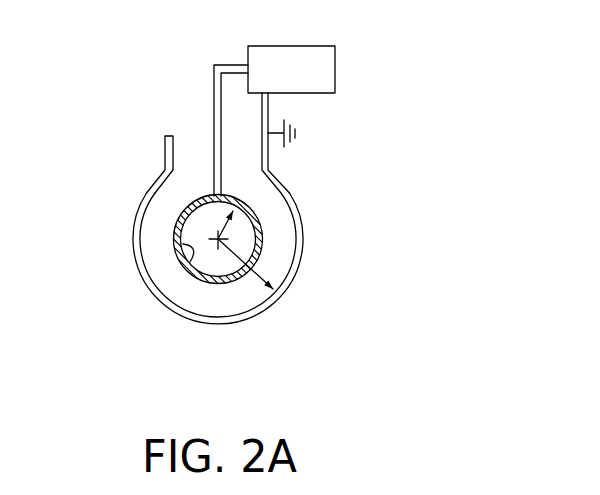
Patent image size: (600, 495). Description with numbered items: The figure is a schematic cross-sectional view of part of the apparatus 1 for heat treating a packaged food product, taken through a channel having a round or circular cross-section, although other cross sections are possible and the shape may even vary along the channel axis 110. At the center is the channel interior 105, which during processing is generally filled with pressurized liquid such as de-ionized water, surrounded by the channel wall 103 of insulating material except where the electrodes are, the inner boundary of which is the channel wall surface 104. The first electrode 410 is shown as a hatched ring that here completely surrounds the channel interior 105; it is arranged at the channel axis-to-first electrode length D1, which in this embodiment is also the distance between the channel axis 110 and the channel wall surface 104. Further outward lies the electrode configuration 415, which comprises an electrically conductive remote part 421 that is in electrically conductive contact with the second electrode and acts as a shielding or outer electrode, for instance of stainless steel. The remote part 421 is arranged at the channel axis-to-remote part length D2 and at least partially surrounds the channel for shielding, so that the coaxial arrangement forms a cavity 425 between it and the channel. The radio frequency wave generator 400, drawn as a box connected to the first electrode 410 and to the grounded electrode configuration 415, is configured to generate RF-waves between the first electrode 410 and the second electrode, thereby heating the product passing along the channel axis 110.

The apparatus 1 is at (415, 150).
The channel wall 103 is at (185, 265).
The channel wall surface 104 is at (218, 239).
The channel interior 105 is at (221, 266).
The channel axis 110 is at (218, 239).
The radio frequency (RF) wave generator 400 is at (343, 48).
The first electrode 410 is at (214, 123).
The electrode configuration 415 is at (152, 160).
The remote part 421 is at (298, 265).
The cavity 425 is at (285, 248).
The channel axis-to-first electrode length D1 is at (233, 211).
The channel axis-to-remote part length D2 is at (260, 279).